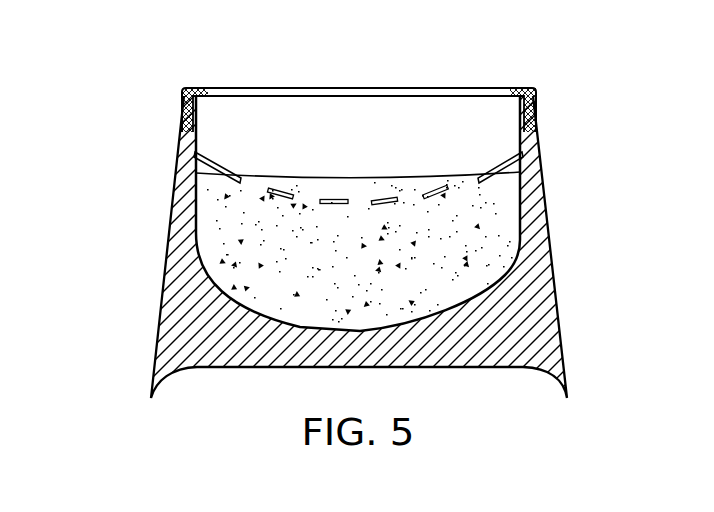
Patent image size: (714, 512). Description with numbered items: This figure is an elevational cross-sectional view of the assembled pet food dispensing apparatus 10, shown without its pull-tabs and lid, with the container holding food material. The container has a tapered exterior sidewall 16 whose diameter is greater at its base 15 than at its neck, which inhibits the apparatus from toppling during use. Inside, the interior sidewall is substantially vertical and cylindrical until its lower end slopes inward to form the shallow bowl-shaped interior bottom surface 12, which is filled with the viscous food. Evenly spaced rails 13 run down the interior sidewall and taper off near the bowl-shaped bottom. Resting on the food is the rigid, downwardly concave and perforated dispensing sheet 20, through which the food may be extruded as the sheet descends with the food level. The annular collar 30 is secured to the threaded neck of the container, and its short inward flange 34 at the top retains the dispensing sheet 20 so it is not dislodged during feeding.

The container 10 is at (93, 197).
The bowl-shaped interior bottom surface 12 is at (365, 318).
The rails 13 is at (195, 153).
The base 15 is at (495, 367).
The exterior sidewall 16 is at (167, 246).
The dispensing sheet 20 is at (334, 199).
The collar 30 is at (328, 82).
The inward flange 34 is at (200, 90).